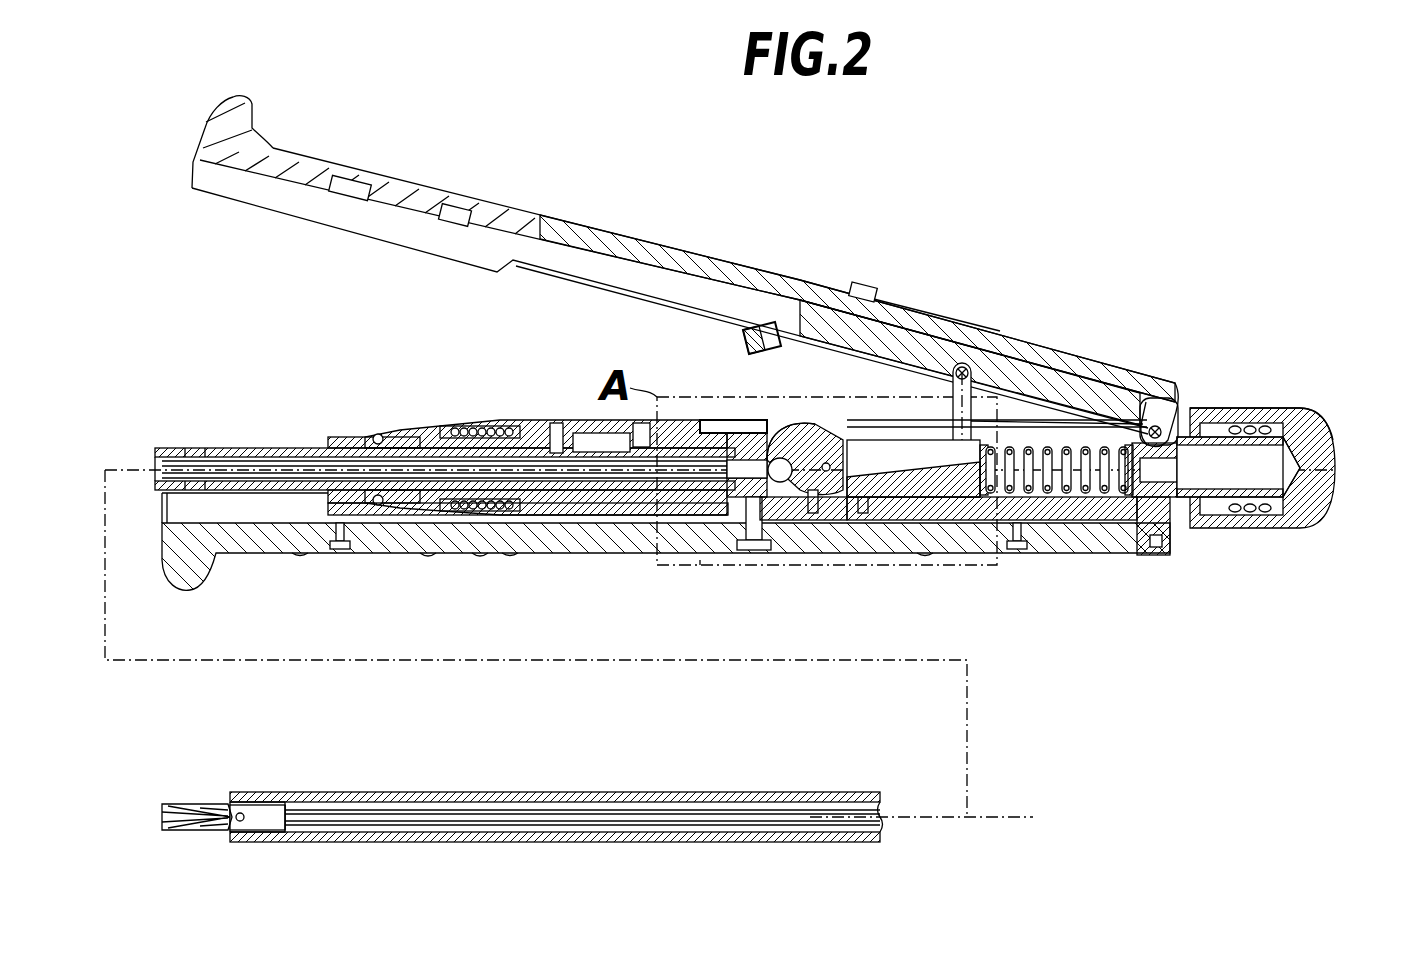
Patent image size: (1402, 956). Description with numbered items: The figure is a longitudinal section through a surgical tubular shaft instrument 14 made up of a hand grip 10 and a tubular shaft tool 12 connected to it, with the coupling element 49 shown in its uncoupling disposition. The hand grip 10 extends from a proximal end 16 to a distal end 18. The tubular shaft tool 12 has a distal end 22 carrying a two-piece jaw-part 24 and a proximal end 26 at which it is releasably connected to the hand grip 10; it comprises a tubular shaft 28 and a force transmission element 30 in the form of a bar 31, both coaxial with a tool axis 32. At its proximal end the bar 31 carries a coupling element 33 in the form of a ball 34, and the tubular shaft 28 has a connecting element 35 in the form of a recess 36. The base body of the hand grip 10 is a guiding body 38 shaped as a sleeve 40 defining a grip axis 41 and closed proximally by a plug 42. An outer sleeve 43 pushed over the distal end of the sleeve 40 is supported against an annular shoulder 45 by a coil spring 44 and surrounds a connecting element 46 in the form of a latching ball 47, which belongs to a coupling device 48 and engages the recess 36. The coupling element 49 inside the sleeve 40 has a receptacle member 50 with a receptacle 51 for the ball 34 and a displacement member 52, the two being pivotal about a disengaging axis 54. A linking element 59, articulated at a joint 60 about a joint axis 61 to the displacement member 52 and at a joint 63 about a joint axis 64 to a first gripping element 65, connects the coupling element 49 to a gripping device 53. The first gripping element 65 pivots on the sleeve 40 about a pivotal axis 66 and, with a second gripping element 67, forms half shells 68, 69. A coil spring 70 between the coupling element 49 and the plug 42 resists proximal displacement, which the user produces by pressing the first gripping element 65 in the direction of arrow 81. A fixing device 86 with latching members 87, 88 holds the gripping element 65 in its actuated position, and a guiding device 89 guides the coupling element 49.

The hand grip 10 is at (595, 200).
The tubular shaft tool 12 is at (418, 778).
The tubular shaft instrument 14 is at (1028, 215).
The proximal end 16 is at (1330, 432).
The distal end 18 is at (162, 508).
The distal end 22 is at (195, 805).
The jaw-part 24 is at (160, 802).
The proximal end 26 is at (486, 452).
The tubular shaft 28 is at (260, 452).
The force transmission element 30 is at (548, 466).
The bar 31 is at (600, 470).
The tool axis 32 is at (697, 565).
The coupling element 33 is at (750, 502).
The ball 34 is at (780, 482).
The connecting element 35 is at (190, 450).
The recess 36 is at (203, 452).
The guiding body 38 is at (1030, 510).
The sleeve 40 is at (1090, 500).
The grip axis 41 is at (1262, 478).
The plug 42 is at (1295, 410).
The outer sleeve 43 is at (410, 425).
The coil spring 44 is at (450, 428).
The annular shoulder 45 is at (545, 422).
The connecting element 46 is at (378, 434).
The latching ball 47 is at (368, 440).
The coupling device 48 is at (797, 400).
The coupling element 49 is at (968, 500).
The receptacle member 50 is at (845, 450).
The receptacle 51 is at (820, 440).
The displacement member 52 is at (912, 480).
The gripping device 53 is at (1105, 352).
The disengaging axis 54 is at (832, 500).
The linking element 59 is at (978, 430).
The articulated joint 60 is at (992, 478).
The joint axis 61 is at (995, 545).
The articulated joint 63 is at (965, 442).
The joint axis 64 is at (962, 373).
The first gripping element 65 is at (905, 322).
The pivotal axis 66 is at (1155, 432).
The second gripping element 67 is at (428, 556).
The half shell 68 is at (490, 208).
The half shell 69 is at (480, 556).
The coil spring 70 is at (1140, 520).
The arrow 81 is at (655, 232).
The fixing device 86 is at (738, 328).
The latching member 87 is at (742, 420).
The latching member 88 is at (763, 326).
The guiding device 89 is at (883, 520).